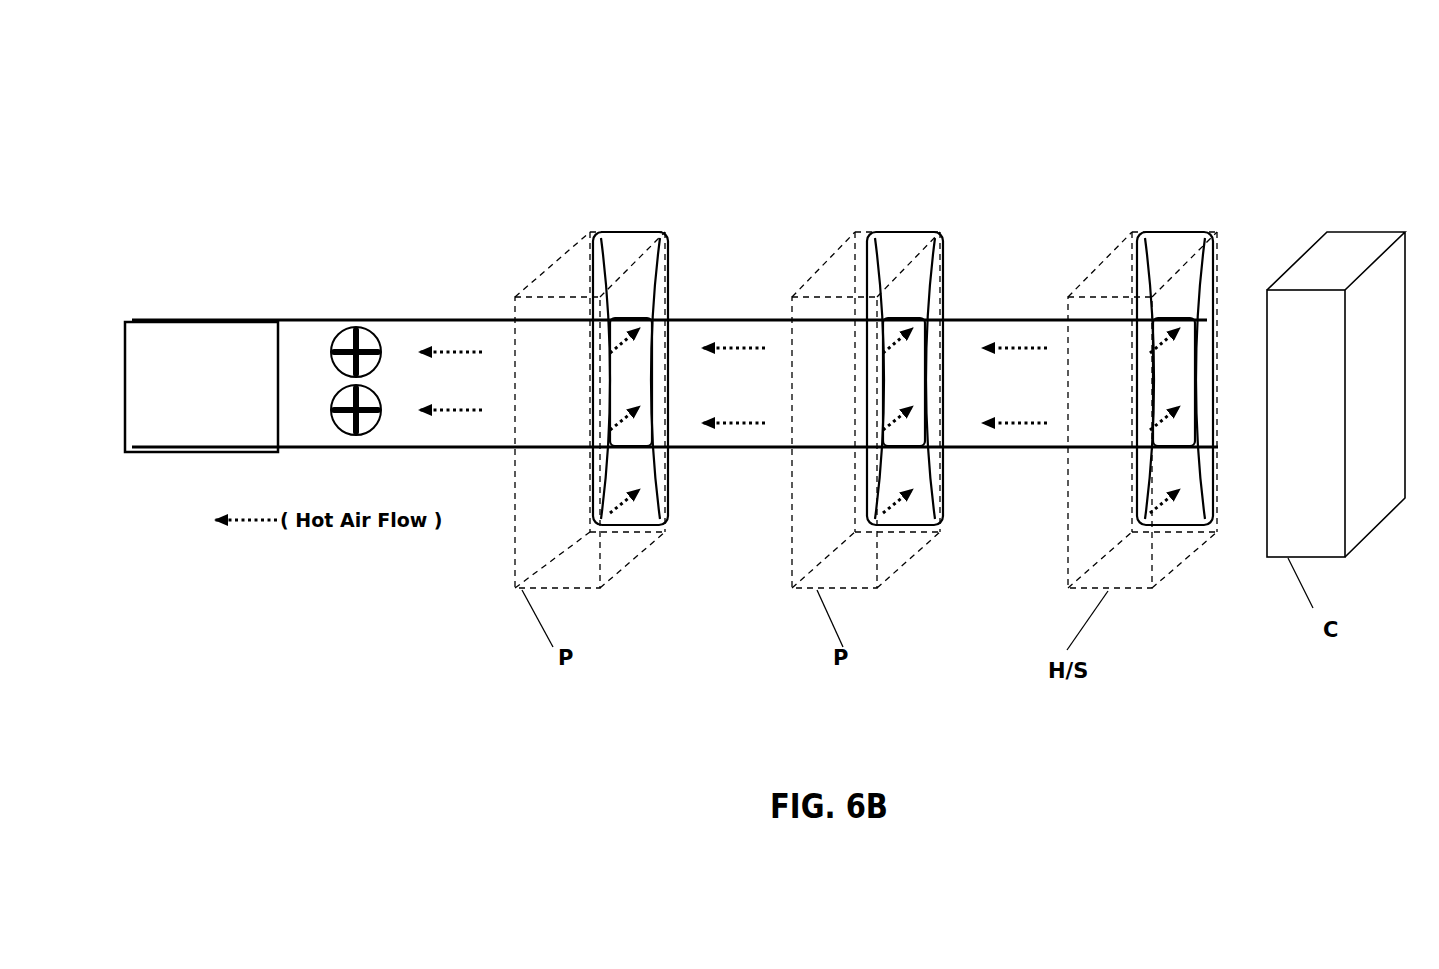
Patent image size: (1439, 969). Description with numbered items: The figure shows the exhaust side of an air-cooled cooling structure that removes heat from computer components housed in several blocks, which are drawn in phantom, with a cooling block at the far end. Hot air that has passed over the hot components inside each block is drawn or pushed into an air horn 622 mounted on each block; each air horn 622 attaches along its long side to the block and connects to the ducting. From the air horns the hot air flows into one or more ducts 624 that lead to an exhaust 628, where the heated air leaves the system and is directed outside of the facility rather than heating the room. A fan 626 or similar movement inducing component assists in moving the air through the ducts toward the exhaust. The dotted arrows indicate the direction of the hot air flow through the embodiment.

The air horn 622 is at (898, 228).
The duct 624 is at (998, 450).
The fan 626 is at (368, 296).
The exhaust 628 is at (215, 407).